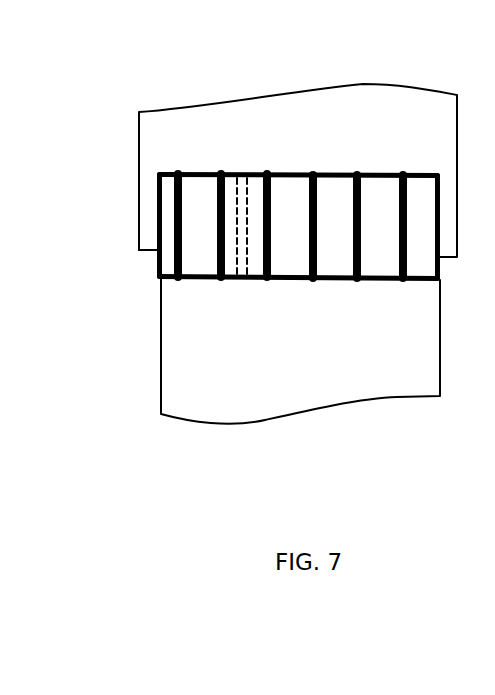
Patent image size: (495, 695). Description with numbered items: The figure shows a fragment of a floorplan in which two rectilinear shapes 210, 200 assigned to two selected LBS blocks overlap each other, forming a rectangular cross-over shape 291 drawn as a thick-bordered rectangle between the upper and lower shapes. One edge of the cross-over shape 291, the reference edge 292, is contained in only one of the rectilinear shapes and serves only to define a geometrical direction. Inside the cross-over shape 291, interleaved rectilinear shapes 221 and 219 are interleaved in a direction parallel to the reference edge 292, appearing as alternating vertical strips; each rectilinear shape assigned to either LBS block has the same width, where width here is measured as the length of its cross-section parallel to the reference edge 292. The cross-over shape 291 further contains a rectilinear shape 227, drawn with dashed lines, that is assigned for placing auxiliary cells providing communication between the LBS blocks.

The rectilinear shape 200 is at (237, 95).
The rectilinear shape 210 is at (308, 427).
The interleaved rectilinear shape 219 is at (175, 207).
The interleaved rectilinear shape 221 is at (168, 185).
The rectilinear shape for auxiliary cells 227 is at (243, 171).
The cross-over shape 291 is at (183, 279).
The reference edge 292 is at (157, 172).